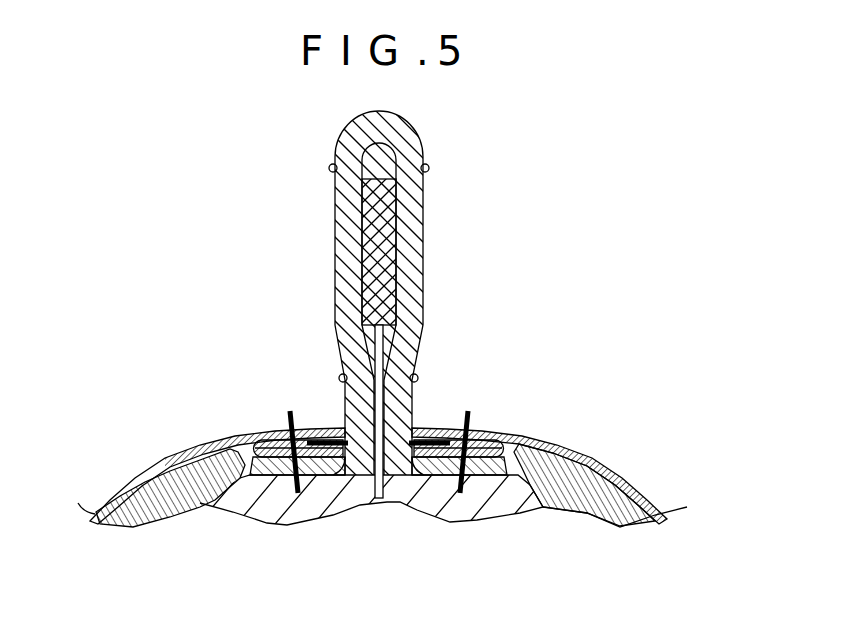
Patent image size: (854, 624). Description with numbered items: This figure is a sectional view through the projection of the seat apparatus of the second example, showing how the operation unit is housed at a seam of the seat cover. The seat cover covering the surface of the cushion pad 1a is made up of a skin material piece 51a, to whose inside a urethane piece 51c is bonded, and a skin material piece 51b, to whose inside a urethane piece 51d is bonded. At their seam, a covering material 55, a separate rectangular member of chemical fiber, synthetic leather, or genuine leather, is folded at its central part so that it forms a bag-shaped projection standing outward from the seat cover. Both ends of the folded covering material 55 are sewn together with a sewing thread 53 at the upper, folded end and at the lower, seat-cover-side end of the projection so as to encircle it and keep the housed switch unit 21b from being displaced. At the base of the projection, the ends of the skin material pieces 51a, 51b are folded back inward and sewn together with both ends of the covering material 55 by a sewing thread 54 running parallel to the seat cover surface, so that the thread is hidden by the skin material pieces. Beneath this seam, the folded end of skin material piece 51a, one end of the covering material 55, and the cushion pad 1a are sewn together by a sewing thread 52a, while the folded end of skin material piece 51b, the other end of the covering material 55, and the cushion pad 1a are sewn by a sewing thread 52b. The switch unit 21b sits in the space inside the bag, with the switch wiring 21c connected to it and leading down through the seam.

The cushion pad 1a is at (476, 505).
The switch unit 21b is at (373, 219).
The switch wiring 21c is at (366, 502).
The skin material piece 51a is at (550, 442).
The skin material piece 51b is at (207, 443).
The urethane piece 51c is at (597, 472).
The urethane piece 51d is at (162, 468).
The sewing thread 52a is at (469, 418).
The sewing thread 52b is at (290, 418).
The sewing thread 53 is at (430, 168).
The sewing thread 54 is at (335, 440).
The covering material 55 is at (416, 228).